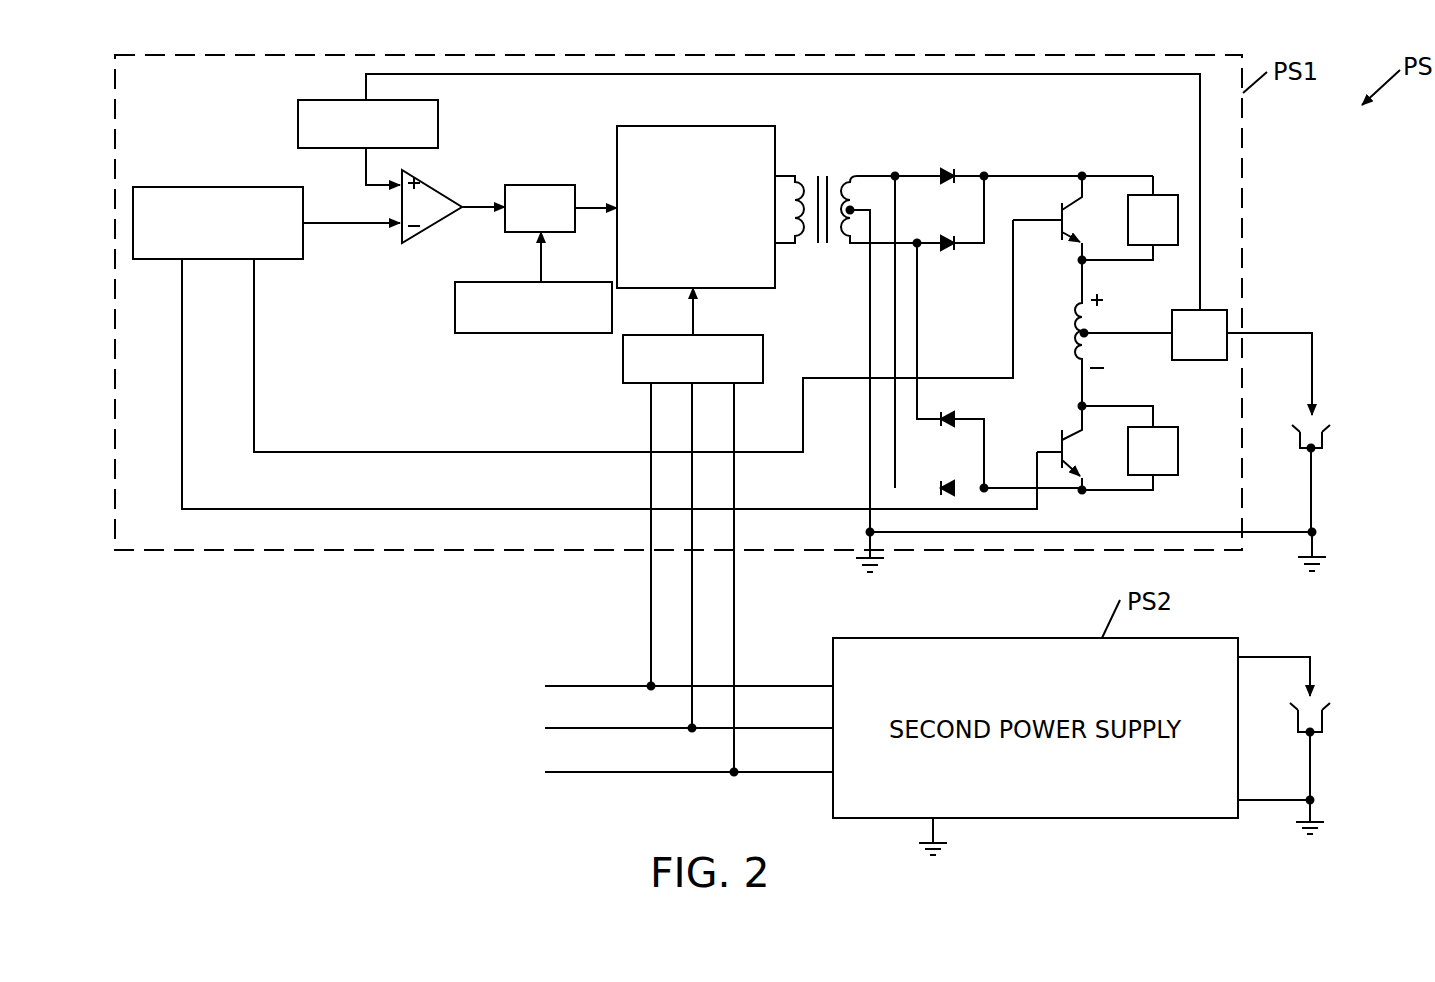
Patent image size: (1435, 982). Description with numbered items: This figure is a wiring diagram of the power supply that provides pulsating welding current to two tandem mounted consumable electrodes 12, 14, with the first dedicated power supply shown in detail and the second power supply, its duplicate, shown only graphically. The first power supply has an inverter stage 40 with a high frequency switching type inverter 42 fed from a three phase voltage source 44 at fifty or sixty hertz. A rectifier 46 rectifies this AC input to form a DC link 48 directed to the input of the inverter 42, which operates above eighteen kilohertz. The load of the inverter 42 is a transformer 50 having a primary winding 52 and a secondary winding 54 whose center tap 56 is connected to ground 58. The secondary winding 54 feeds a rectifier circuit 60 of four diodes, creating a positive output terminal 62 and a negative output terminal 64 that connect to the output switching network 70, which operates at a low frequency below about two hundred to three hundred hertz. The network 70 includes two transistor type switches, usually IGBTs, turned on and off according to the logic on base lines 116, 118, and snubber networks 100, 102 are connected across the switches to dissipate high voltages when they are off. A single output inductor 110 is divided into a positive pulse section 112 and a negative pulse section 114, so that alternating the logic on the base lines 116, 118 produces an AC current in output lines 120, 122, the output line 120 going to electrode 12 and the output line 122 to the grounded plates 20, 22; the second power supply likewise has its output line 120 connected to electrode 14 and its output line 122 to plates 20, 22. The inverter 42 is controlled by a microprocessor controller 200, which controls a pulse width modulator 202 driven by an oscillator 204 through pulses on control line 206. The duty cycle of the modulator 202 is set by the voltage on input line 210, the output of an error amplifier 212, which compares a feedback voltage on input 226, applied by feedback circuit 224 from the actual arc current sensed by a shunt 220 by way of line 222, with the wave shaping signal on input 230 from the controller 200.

The tandem electrode 12 is at (1322, 412).
The tandem electrode 14 is at (1320, 694).
The plate 20 is at (1295, 432).
The plate 22 is at (1327, 432).
The inverter stage 40 is at (846, 191).
The inverter 42 is at (685, 125).
The three phase voltage source 44 is at (555, 677).
The rectifier 46 is at (632, 383).
The DC link 48 is at (697, 313).
The transformer 50 is at (823, 165).
The primary winding 52 is at (803, 227).
The secondary winding 54 is at (847, 233).
The center tap 56 is at (852, 208).
The ground 58 is at (868, 453).
The rectifier circuit 60 is at (902, 156).
The positive output terminal 62 is at (1010, 173).
The negative output terminal 64 is at (1050, 490).
The output switching network 70 is at (1060, 161).
The snubber network 100 is at (1163, 195).
The snubber network 102 is at (1167, 427).
The output inductor 110 is at (1065, 333).
The positive pulse section 112 is at (1086, 320).
The negative pulse section 114 is at (1072, 362).
The base line 116 is at (535, 452).
The base line 118 is at (542, 507).
The output line 120 is at (1282, 333).
The output line 122 is at (1273, 537).
The microprocessor controller 200 is at (200, 187).
The pulse width modulator 202 is at (527, 185).
The oscillator 204 is at (518, 333).
The control line 206 is at (541, 259).
The input line 210 is at (472, 200).
The error amplifier 212 is at (422, 233).
The shunt 220 is at (1217, 310).
The line 222 is at (1200, 117).
The feedback circuit 224 is at (298, 98).
The input 226 is at (366, 167).
The input 230 is at (342, 227).